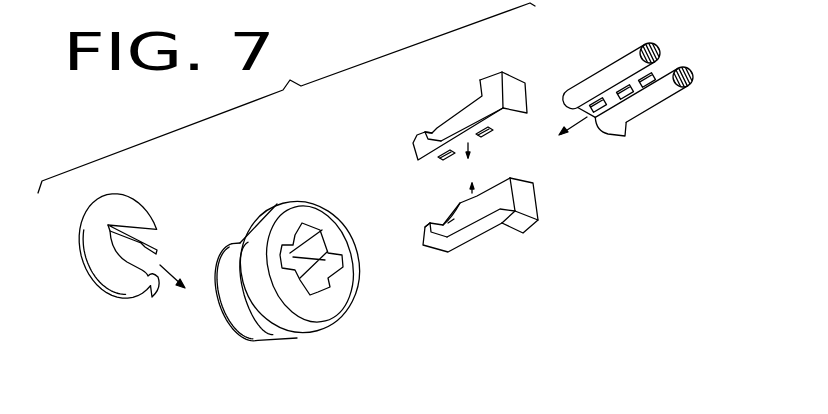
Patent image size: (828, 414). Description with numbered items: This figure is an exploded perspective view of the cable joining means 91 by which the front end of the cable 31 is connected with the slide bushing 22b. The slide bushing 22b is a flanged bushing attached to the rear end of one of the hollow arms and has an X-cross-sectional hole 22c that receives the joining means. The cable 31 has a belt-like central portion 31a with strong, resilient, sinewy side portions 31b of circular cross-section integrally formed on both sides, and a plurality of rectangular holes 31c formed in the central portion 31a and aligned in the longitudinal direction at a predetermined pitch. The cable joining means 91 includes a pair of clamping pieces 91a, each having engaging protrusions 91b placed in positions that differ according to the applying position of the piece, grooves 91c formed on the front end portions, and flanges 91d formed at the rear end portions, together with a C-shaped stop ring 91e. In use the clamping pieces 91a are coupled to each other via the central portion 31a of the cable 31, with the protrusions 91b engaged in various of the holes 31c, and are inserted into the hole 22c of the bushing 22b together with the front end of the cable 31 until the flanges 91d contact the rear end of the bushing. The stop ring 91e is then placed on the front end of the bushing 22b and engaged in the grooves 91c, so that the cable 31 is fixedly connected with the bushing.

The slide bushing 22b is at (294, 276).
The X-cross-sectional hole 22c is at (286, 202).
The cable 31 is at (632, 88).
The central portion 31a is at (667, 62).
The side portions 31b is at (600, 79).
The rectangular holes 31c is at (616, 112).
The cable joining means 91 is at (492, 193).
The clamping pieces 91a is at (463, 113).
The engaging protrusions 91b is at (470, 133).
The grooves 91c is at (428, 136).
The flanges 91d is at (508, 84).
The C-shaped stop ring 91e is at (122, 287).